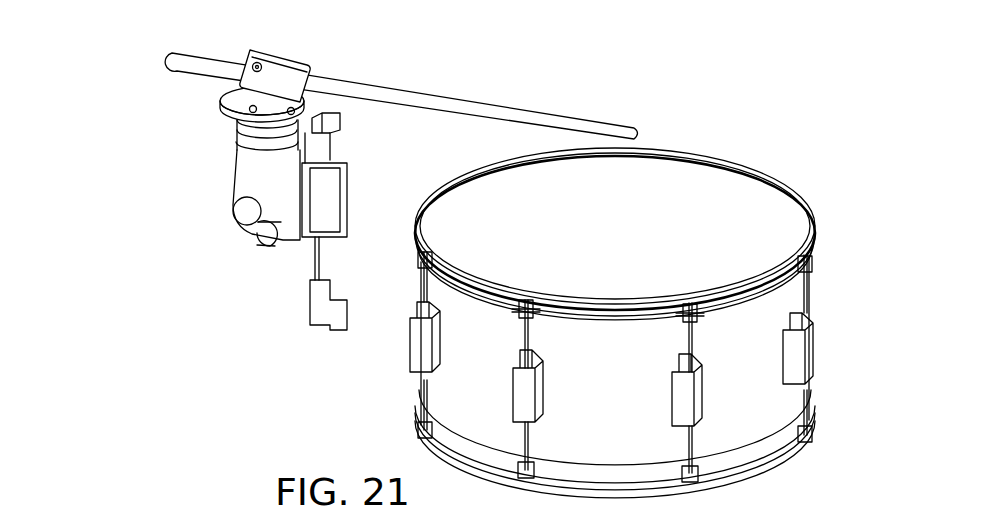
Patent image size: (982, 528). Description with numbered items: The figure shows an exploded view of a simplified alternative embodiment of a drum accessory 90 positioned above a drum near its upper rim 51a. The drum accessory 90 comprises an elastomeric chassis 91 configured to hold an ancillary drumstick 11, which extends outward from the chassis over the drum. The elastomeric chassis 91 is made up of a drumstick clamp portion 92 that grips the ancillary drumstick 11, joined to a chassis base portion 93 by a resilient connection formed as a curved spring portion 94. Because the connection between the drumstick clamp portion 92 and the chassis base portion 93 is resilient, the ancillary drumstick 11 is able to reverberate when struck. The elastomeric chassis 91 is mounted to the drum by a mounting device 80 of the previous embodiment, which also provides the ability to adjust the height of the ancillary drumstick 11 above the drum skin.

The ancillary drumstick 11 is at (522, 115).
The upper rim 51a is at (488, 282).
The mounting device 80 is at (209, 205).
The drum accessory 90 is at (246, 169).
The elastomeric chassis 91 is at (175, 158).
The drumstick clamp portion 92 is at (253, 87).
The chassis base portion 93 is at (250, 130).
The curved spring portion 94 is at (227, 108).